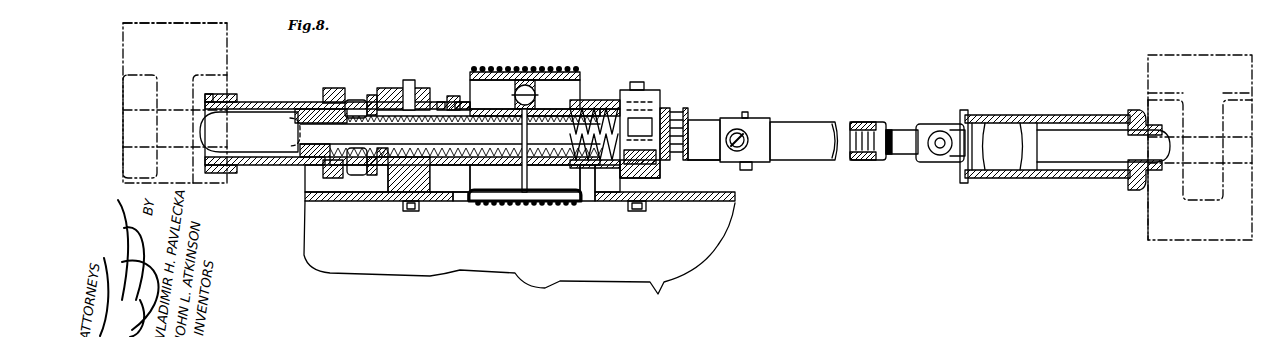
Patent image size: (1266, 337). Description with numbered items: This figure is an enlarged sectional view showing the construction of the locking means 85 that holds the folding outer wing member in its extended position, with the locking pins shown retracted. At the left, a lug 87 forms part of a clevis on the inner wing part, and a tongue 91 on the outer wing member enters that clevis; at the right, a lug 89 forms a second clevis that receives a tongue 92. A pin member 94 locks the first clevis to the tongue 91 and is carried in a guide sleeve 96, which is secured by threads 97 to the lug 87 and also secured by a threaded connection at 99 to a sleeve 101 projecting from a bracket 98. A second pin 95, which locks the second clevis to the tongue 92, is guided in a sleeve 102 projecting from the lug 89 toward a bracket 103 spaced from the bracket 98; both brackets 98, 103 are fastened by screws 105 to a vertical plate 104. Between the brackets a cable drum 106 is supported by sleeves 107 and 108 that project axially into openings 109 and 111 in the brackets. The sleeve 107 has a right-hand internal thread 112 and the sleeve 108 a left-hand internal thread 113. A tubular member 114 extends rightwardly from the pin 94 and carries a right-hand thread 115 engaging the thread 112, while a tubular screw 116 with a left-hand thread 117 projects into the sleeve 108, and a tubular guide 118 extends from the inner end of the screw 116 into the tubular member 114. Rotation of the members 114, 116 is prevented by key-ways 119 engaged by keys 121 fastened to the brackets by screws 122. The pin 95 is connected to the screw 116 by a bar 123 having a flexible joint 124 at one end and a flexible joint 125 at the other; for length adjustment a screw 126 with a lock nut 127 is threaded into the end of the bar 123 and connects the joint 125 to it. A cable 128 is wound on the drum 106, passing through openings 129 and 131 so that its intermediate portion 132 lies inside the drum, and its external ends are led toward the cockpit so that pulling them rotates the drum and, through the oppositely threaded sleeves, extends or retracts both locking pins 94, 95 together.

The control shaft 85 is at (805, 165).
The lug 87 is at (222, 95).
The lug 89 is at (1160, 192).
The tongue 91 is at (143, 163).
The tongue 92 is at (1203, 183).
The locking pin 94 is at (258, 120).
The locking pin 95 is at (1080, 135).
The guide sleeve 96 is at (298, 102).
The threads 97 is at (218, 104).
The bracket 98 is at (413, 82).
The threaded connection 99 is at (363, 102).
The sleeve 101 is at (376, 180).
The sleeve 102 is at (1001, 115).
The bracket 103 is at (647, 90).
The vertical plate 104 is at (682, 203).
The screw 105 is at (411, 212).
The cable drum 106 is at (582, 74).
The sleeve 107 is at (517, 90).
The sleeve 108 is at (598, 108).
The opening 109 is at (431, 100).
The opening 111 is at (664, 160).
The right-hand internal thread 112 is at (455, 96).
The left-hand internal thread 113 is at (606, 200).
The tubular member 114 is at (328, 175).
The right-hand thread 115 is at (352, 165).
The tubular screw 116 is at (700, 122).
The left-hand thread 117 is at (690, 142).
The tubular guide 118 is at (487, 203).
The key-way 119 is at (303, 157).
The key 121 is at (372, 100).
The screw 122 is at (385, 98).
The bar 123 is at (820, 130).
The flexible joint 124 is at (772, 118).
The flexible joint 125 is at (940, 118).
The screw 126 is at (900, 150).
The lock nut 127 is at (880, 120).
The cable 128 is at (536, 68).
The opening 129 is at (464, 205).
The opening 131 is at (578, 206).
The intermediate portion 132 is at (538, 208).